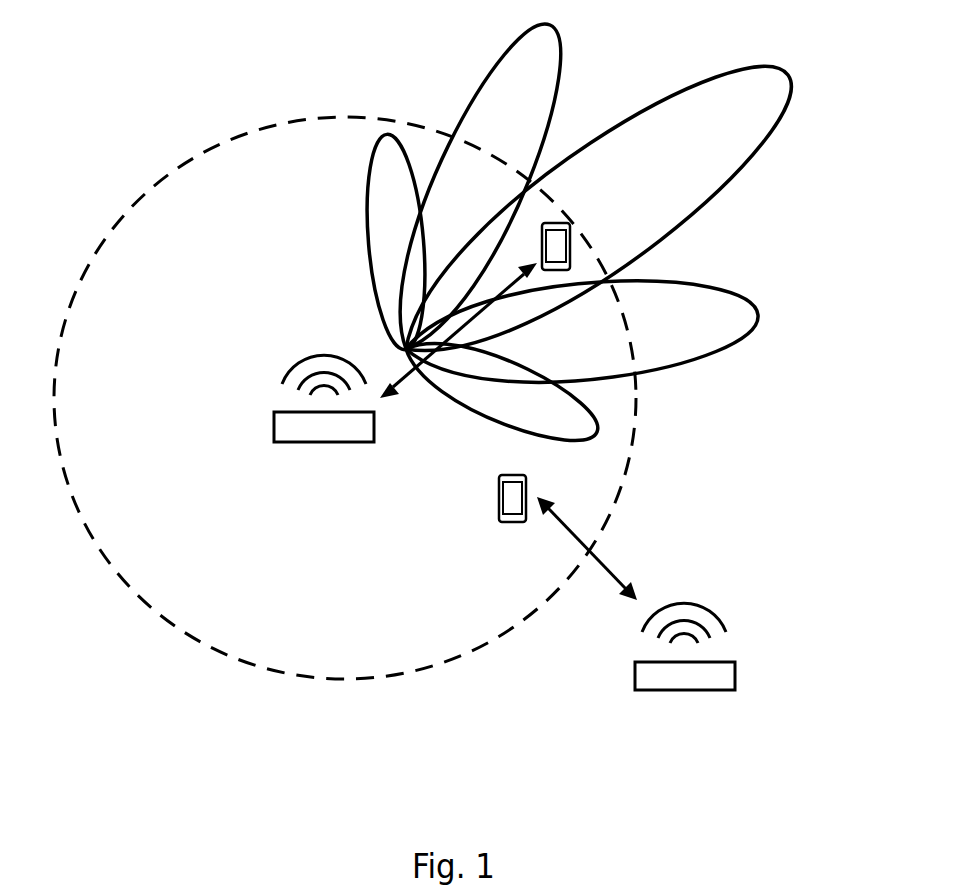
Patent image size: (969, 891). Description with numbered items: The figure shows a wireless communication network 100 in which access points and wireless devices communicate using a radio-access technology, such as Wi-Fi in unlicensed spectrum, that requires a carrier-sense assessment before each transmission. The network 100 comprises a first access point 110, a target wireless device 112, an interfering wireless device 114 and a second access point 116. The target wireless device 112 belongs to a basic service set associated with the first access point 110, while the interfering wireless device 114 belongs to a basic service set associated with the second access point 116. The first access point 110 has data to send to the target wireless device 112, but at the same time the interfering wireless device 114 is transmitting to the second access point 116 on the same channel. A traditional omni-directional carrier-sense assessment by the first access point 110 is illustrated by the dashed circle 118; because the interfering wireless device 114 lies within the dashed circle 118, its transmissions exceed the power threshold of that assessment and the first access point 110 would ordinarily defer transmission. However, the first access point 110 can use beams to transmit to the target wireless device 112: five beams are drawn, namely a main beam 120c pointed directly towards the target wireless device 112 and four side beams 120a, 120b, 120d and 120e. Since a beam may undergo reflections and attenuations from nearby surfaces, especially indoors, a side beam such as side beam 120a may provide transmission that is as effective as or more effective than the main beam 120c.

The wireless communication network 100 is at (142, 735).
The first access point 110 is at (374, 425).
The target wireless device 112 is at (568, 223).
The interfering wireless device 114 is at (500, 497).
The second access point 116 is at (735, 675).
The dashed circle 118 is at (225, 140).
The side beam 120a is at (372, 160).
The side beam 120b is at (565, 30).
The main beam 120c is at (790, 75).
The side beam 120d is at (762, 310).
The side beam 120e is at (483, 415).